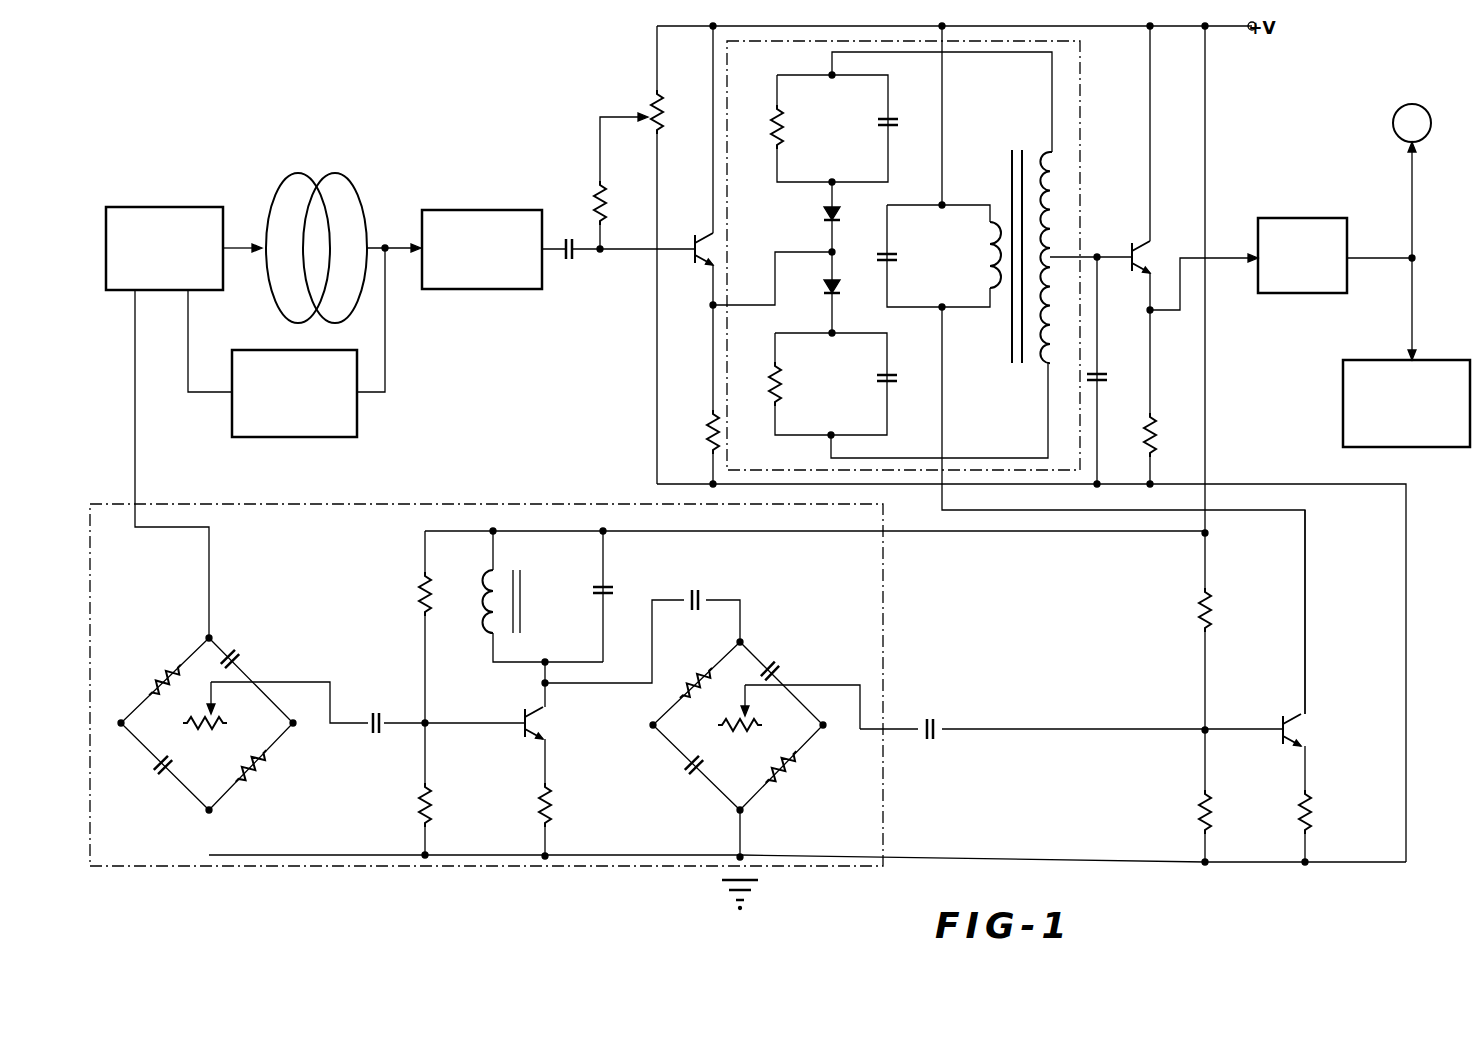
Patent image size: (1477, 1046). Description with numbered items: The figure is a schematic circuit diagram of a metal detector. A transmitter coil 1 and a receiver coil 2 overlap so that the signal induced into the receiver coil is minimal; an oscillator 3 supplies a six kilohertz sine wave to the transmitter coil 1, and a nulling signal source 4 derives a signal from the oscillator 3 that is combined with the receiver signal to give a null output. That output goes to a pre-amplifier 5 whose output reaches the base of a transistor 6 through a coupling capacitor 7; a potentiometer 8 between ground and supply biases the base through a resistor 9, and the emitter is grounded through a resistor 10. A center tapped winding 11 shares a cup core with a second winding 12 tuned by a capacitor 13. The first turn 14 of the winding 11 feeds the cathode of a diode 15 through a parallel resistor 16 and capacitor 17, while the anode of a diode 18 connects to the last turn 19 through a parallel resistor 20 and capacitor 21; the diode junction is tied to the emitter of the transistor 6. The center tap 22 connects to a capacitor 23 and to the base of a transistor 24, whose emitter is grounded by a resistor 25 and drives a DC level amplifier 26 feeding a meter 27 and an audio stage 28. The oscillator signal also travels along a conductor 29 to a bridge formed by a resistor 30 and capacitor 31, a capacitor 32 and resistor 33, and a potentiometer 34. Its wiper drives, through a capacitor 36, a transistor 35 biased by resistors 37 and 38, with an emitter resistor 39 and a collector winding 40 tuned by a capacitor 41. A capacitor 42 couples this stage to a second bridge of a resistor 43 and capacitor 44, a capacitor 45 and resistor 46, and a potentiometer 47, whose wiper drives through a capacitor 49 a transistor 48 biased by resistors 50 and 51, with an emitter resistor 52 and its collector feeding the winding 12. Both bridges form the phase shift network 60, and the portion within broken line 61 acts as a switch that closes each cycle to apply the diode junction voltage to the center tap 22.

The transmitter coil 1 is at (286, 182).
The receiver coil 2 is at (354, 184).
The oscillator 3 is at (180, 207).
The nulling signal source 4 is at (288, 437).
The pre-amplifier 5 is at (483, 289).
The transistor 6 is at (715, 255).
The coupling capacitor 7 is at (577, 259).
The potentiometer 8 is at (662, 109).
The resistor 9 is at (596, 183).
The resistor 10 is at (706, 434).
The center tapped winding 11 is at (1049, 215).
The second winding 12 is at (990, 235).
The capacitor 13 is at (893, 263).
The first turn 14 is at (1048, 366).
The diode 15 is at (839, 285).
The resistor 16 is at (772, 374).
The capacitor 17 is at (887, 382).
The diode 18 is at (840, 212).
The last turn 19 is at (1054, 151).
The resistor 20 is at (784, 126).
The capacitor 21 is at (892, 133).
The center tap 22 is at (1062, 259).
The capacitor 23 is at (1097, 370).
The transistor 24 is at (1138, 250).
The resistor 25 is at (1150, 434).
The amplifier 26 is at (1316, 218).
The meter 27 is at (1394, 112).
The audio stage 28 is at (1343, 404).
The conductor 29 is at (190, 527).
The resistor 30 is at (154, 674).
The capacitor 31 is at (146, 768).
The capacitor 32 is at (242, 659).
The resistor 33 is at (244, 776).
The potentiometer 34 is at (208, 730).
The transistor 35 is at (538, 724).
The capacitor 36 is at (368, 734).
The resistor 37 is at (420, 586).
The resistor 38 is at (409, 789).
The resistor 39 is at (562, 819).
The winding 40 is at (486, 576).
The capacitor 41 is at (606, 586).
The capacitor 42 is at (702, 600).
The resistor 43 is at (696, 672).
The capacitor 44 is at (676, 766).
The capacitor 45 is at (777, 672).
The resistor 46 is at (790, 776).
The potentiometer 47 is at (753, 730).
The transistor 48 is at (1296, 740).
The capacitor 49 is at (940, 721).
The resistor 50 is at (1210, 607).
The resistor 51 is at (1206, 810).
The resistor 52 is at (1306, 810).
The phase shift network 60 is at (96, 826).
The broken line portion 61 is at (920, 478).